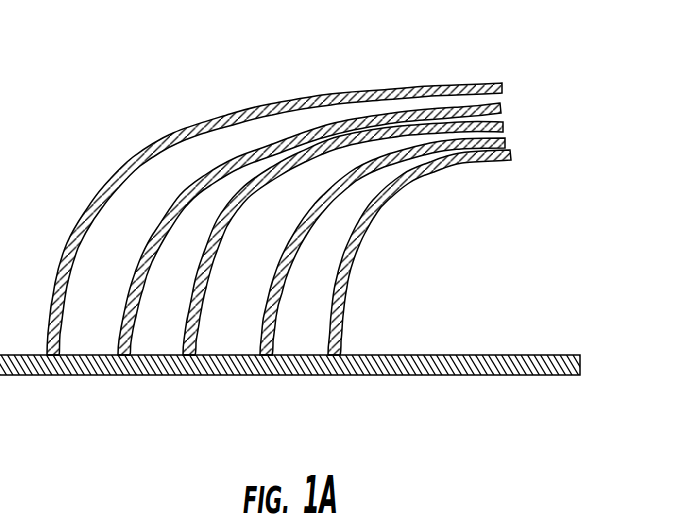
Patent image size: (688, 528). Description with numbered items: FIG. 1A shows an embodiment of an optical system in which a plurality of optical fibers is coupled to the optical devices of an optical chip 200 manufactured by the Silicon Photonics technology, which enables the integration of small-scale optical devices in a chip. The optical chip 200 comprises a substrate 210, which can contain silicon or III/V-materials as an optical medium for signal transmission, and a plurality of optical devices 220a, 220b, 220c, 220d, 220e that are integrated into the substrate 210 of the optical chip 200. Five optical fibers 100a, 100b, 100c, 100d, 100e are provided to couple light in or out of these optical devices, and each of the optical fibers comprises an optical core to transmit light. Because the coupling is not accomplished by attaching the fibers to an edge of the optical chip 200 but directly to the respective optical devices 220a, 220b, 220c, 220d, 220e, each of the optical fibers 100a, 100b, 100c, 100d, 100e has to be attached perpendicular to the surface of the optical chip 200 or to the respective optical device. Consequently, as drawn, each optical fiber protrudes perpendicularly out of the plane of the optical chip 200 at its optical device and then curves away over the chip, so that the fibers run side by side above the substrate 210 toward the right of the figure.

The optical fiber 100a is at (503, 90).
The optical fiber 100b is at (501, 110).
The optical fiber 100c is at (504, 128).
The optical fiber 100d is at (506, 143).
The optical fiber 100e is at (511, 156).
The optical chip 200 is at (492, 355).
The substrate 210 is at (443, 367).
The optical device 220a is at (56, 356).
The optical device 220b is at (128, 356).
The optical device 220c is at (192, 356).
The optical device 220d is at (270, 356).
The optical device 220e is at (338, 356).